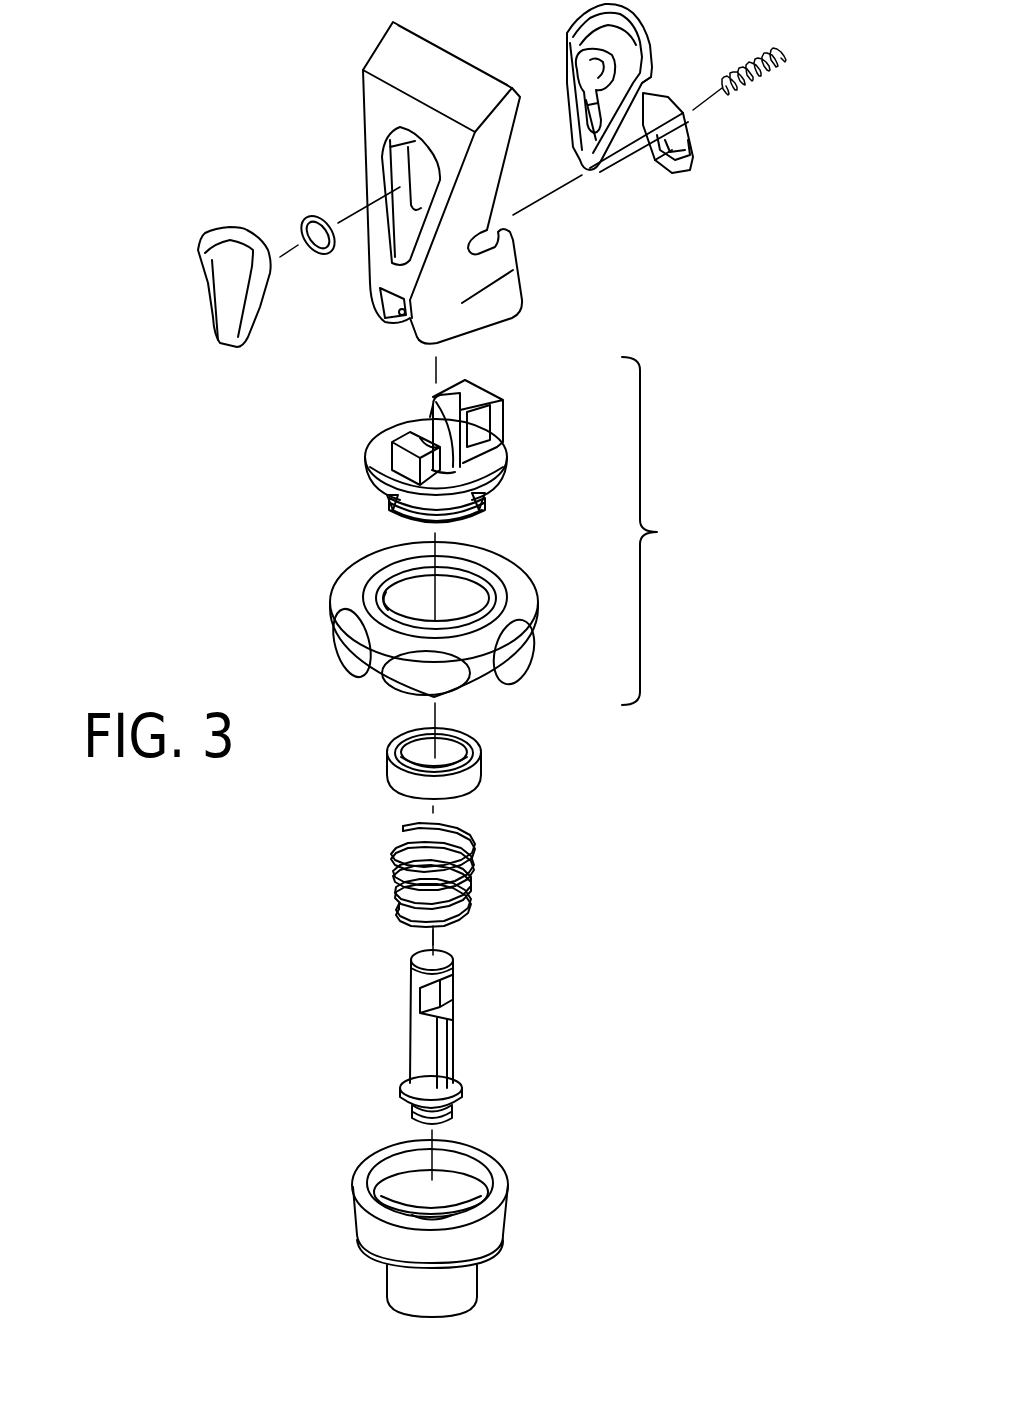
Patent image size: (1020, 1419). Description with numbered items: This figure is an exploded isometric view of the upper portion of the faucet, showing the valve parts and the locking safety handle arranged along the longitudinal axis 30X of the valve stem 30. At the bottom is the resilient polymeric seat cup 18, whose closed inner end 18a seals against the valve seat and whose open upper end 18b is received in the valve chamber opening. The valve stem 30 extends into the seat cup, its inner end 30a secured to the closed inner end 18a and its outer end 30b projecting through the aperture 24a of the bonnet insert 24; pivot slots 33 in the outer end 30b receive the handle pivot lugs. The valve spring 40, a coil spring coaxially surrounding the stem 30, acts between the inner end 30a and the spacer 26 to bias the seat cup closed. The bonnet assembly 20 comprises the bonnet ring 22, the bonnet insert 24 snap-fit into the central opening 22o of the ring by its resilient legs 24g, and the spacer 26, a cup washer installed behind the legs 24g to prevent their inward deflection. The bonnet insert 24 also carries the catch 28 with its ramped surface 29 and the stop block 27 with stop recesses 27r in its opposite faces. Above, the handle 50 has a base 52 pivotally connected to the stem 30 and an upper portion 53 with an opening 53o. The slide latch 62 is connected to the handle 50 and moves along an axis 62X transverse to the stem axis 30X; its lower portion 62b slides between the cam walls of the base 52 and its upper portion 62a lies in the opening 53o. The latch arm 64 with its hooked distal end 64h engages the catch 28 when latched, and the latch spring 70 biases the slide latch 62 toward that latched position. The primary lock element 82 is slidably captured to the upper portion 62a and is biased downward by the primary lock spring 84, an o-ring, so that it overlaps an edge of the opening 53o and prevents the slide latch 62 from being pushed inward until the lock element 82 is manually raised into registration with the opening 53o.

The seat cup 18 is at (441, 1228).
The closed inner end 18a is at (465, 1287).
The open upper end 18b is at (497, 1225).
The bonnet assembly 20 is at (476, 523).
The bonnet ring 22 is at (401, 613).
The central opening 22o is at (393, 608).
The bonnet insert 24 is at (444, 446).
The aperture 24a is at (430, 417).
The resilient legs 24g is at (388, 503).
The spacer 26 is at (482, 747).
The stop block 27 is at (400, 445).
The stop recesses 27r is at (432, 470).
The catch 28 is at (493, 405).
The ramped surface 29 is at (502, 397).
The valve stem 30 is at (453, 1035).
The inner end 30a is at (452, 1113).
The outer end 30b is at (412, 962).
The longitudinal axis 30X is at (438, 938).
The pivot slots 33 is at (428, 998).
The valve spring 40 is at (473, 857).
The handle 50 is at (440, 183).
The base 52 is at (500, 272).
The upper portion 53 is at (381, 52).
The opening 53o is at (400, 220).
The slide latch 62 is at (651, 112).
The upper portion 62a is at (640, 37).
The lower portion 62b is at (657, 92).
The axis 62X is at (550, 197).
The latch arm 64 is at (675, 156).
The hooked distal end 64h is at (670, 173).
The latch spring 70 is at (762, 70).
The primary lock element 82 is at (223, 288).
The primary lock spring 84 is at (317, 221).